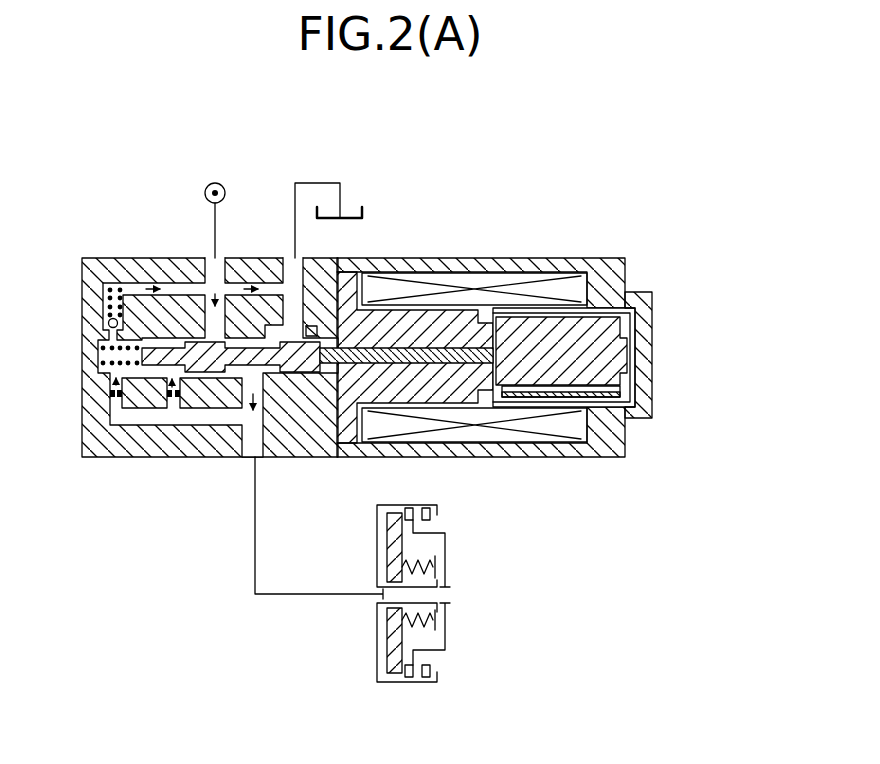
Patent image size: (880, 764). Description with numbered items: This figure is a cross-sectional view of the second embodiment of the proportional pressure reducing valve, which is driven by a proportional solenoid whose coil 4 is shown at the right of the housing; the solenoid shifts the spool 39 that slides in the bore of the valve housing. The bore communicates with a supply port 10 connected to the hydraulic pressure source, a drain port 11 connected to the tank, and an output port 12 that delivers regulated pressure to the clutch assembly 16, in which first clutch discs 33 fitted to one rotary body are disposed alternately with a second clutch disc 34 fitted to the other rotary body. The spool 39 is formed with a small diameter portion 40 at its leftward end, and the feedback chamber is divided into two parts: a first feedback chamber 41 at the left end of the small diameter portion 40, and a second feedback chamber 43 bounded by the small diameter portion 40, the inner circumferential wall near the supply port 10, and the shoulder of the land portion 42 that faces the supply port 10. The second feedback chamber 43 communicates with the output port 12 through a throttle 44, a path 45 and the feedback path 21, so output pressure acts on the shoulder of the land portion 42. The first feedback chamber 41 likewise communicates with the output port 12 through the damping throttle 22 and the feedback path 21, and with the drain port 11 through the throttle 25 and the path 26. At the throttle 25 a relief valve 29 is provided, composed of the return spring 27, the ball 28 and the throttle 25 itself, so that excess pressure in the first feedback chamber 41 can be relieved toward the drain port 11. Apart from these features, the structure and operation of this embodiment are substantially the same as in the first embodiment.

The coil 4 is at (478, 280).
The supply port 10 is at (212, 262).
The drain port 11 is at (293, 268).
The output port 12 is at (258, 447).
The clutch assembly 16 is at (473, 576).
The feedback path 21 is at (214, 414).
The damping throttle 22 is at (110, 398).
The throttle 25 is at (107, 334).
The path 26 is at (150, 350).
The return spring 27 is at (105, 285).
The ball 28 is at (107, 322).
The relief valve 29 is at (97, 293).
The first clutch discs 33 is at (425, 677).
The second clutch disc 34 is at (420, 660).
The spool 39 is at (304, 374).
The small diameter portion 40 is at (128, 280).
The first feedback chamber 41 is at (105, 357).
The land portion 42 is at (194, 372).
The second feedback chamber 43 is at (194, 362).
The throttle 44 is at (163, 393).
The path 45 is at (174, 404).